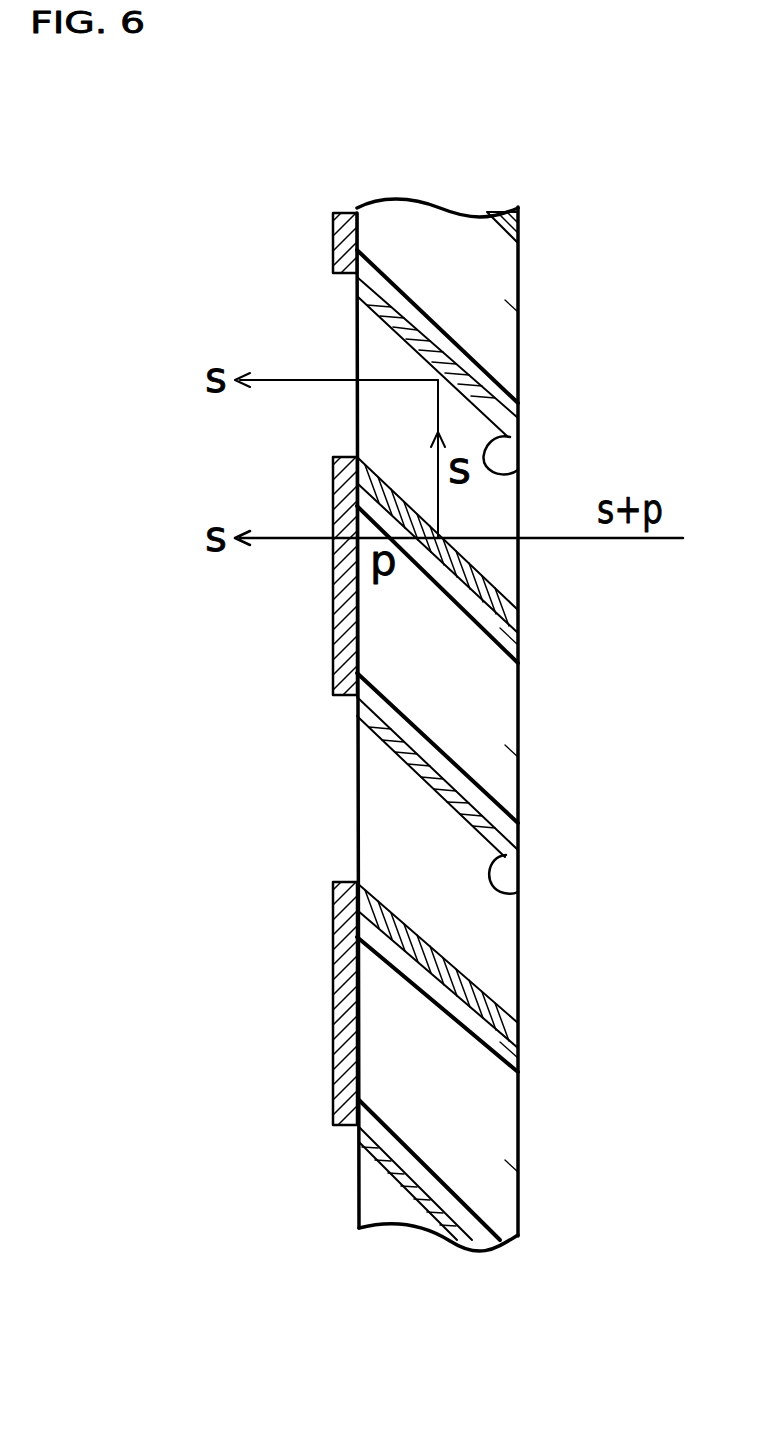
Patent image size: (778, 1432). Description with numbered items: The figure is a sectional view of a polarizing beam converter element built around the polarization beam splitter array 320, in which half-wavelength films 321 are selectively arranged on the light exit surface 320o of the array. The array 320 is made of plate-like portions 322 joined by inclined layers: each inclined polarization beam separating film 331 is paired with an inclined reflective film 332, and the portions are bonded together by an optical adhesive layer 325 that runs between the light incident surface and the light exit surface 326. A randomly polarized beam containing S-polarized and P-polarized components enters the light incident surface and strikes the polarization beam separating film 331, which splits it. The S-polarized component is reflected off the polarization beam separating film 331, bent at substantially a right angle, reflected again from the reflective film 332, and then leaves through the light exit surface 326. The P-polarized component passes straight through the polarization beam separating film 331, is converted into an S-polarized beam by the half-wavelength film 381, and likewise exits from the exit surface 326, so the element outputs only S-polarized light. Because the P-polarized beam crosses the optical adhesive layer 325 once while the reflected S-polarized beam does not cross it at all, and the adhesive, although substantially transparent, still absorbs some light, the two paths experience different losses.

The polarization beam splitter array 320 is at (517, 163).
The light exit surface of the polarization beam splitter array 320o is at (357, 1208).
The half-wavelength film 321 is at (497, 510).
The body wall region 322 is at (492, 277).
The optical adhesive layer 325 is at (484, 371).
The light exit surface 326 is at (353, 410).
The polarization beam separating film 331 is at (528, 597).
The reflective film 332 is at (518, 468).
The half-wavelength film 381 is at (349, 215).